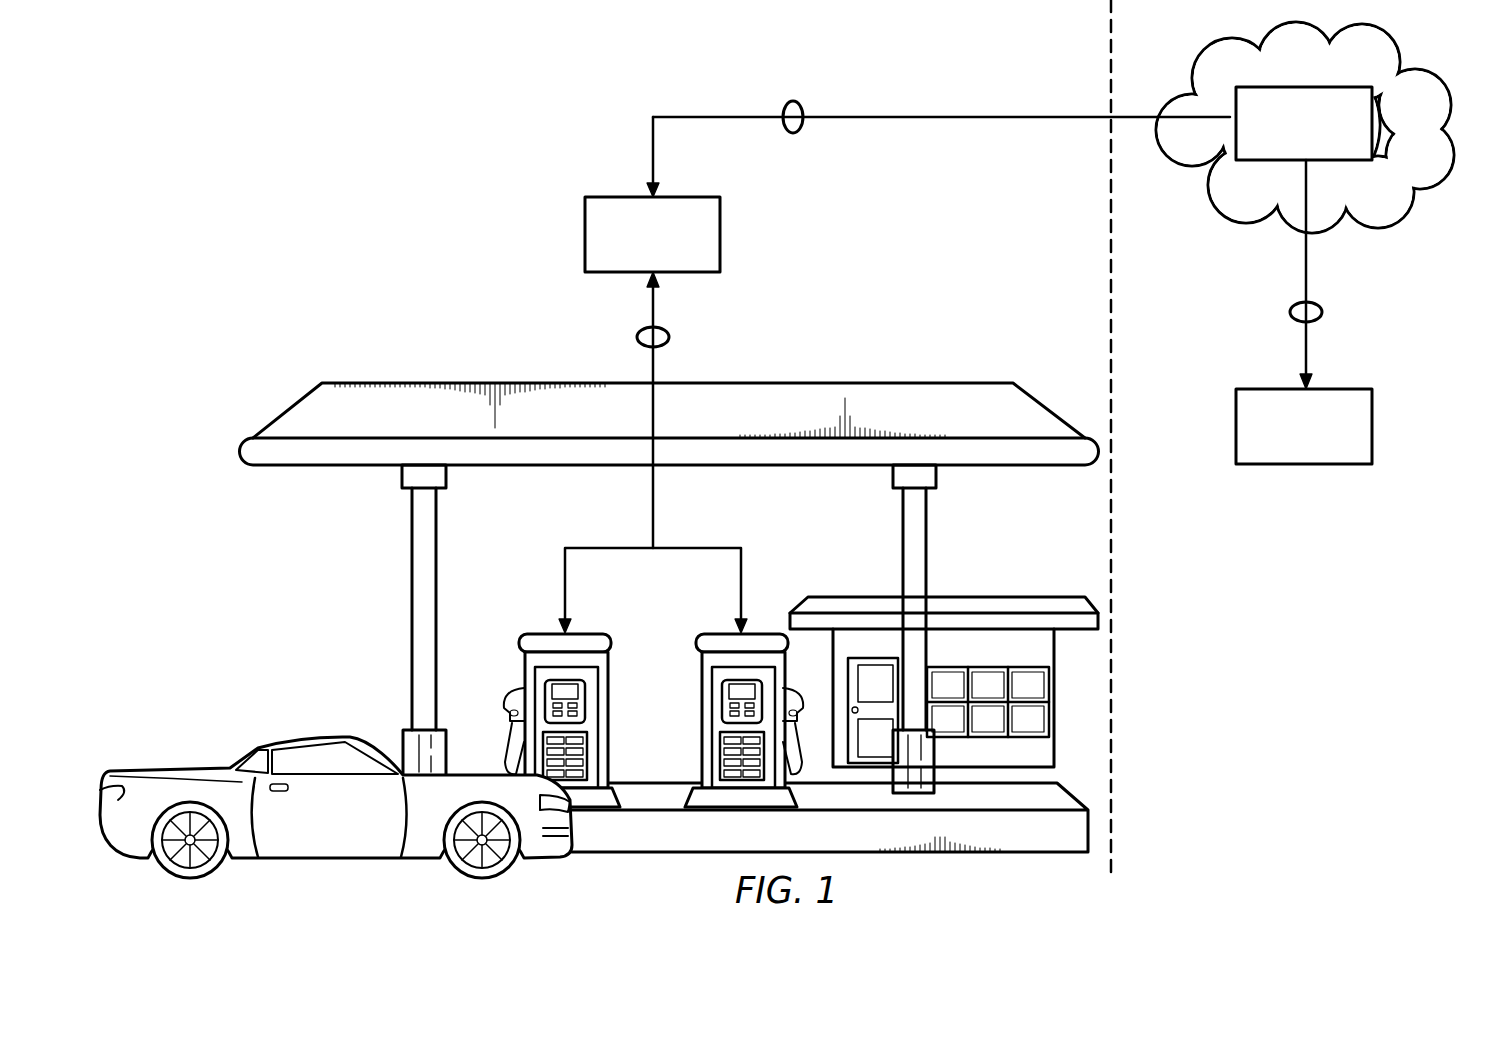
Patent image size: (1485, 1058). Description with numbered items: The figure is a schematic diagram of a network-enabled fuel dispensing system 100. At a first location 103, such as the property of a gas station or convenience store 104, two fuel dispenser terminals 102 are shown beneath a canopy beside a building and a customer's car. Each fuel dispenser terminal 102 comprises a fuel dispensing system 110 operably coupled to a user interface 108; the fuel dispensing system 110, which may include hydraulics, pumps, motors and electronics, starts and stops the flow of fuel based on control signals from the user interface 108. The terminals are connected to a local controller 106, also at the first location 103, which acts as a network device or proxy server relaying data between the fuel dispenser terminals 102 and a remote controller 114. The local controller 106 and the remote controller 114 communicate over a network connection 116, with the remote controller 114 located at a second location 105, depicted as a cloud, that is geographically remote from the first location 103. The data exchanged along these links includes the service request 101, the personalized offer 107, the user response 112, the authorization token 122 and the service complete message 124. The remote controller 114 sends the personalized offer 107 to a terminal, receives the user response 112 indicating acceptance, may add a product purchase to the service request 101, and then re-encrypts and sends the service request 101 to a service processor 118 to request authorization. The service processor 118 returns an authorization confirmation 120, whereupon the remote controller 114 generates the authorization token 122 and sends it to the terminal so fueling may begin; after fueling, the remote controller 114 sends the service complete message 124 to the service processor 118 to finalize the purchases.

The network-enabled fuel dispensing system 100 is at (248, 250).
The service request 101 is at (1013, 344).
The fuel dispenser terminal 102 is at (542, 632).
The first location 103 is at (800, 25).
The convenience store 104 is at (240, 554).
The second location 105 is at (1320, 66).
The local controller 106 is at (722, 233).
The personalized offer 107 is at (697, 344).
The user interface 108 is at (582, 689).
The fuel dispensing system 110 is at (588, 740).
The user response 112 is at (697, 344).
The remote controller 114 is at (1374, 122).
The network connection 116 is at (1130, 119).
The service processor 118 is at (1374, 426).
The authorization confirmation 120 is at (1314, 318).
The authorization token 122 is at (697, 344).
The service complete message 124 is at (703, 330).